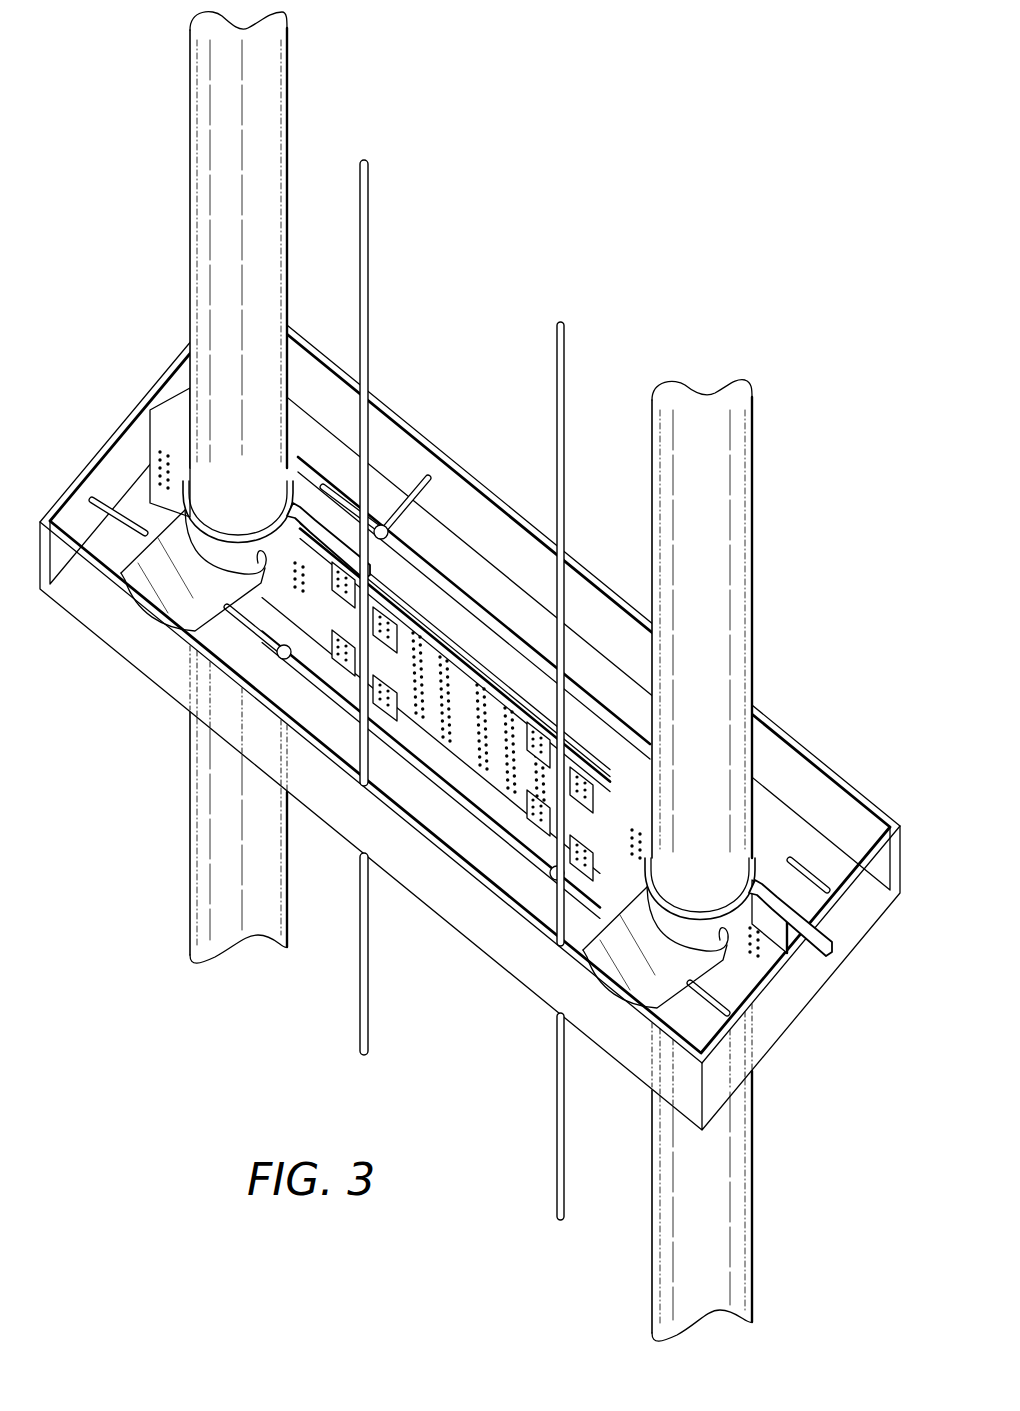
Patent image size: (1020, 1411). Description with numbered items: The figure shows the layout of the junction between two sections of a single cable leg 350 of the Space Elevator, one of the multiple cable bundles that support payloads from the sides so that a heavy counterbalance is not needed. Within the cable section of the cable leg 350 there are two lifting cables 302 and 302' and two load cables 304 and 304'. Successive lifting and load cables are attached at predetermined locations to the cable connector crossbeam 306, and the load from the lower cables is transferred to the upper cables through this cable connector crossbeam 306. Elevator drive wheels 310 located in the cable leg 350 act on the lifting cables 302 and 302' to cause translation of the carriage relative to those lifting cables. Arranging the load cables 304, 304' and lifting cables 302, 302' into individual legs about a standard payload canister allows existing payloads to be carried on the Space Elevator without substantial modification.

The lifting cable 302 is at (486, 435).
The lifting cable 302' is at (488, 1026).
The load cable 304 is at (462, 553).
The load cable 304' is at (456, 1036).
The cable connector crossbeam 306 is at (482, 665).
The elevator drive wheel 310 is at (158, 595).
The cable leg 350 is at (808, 748).